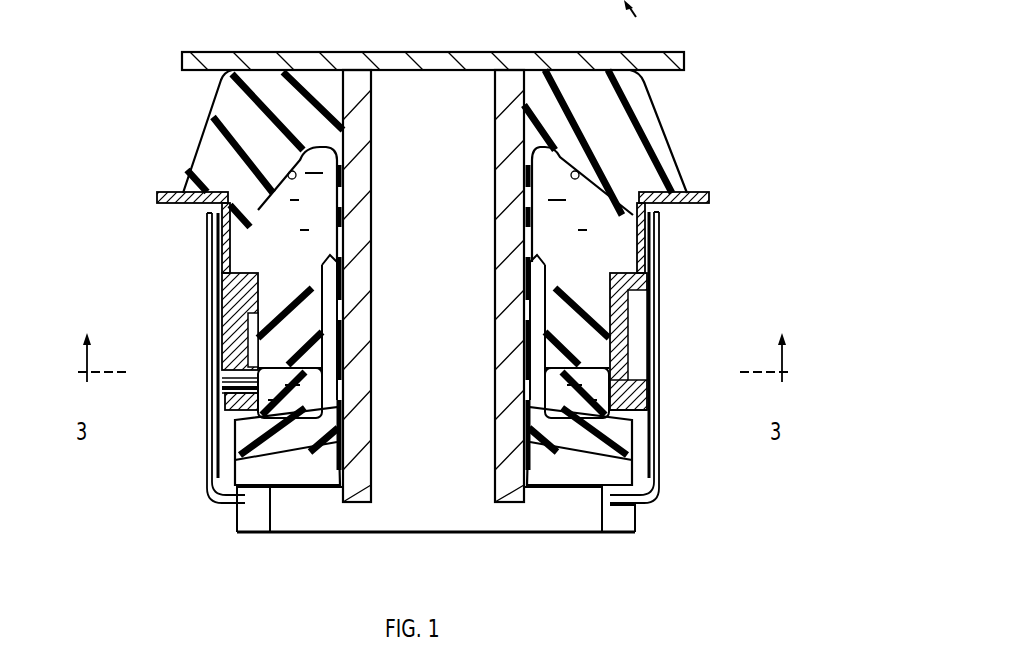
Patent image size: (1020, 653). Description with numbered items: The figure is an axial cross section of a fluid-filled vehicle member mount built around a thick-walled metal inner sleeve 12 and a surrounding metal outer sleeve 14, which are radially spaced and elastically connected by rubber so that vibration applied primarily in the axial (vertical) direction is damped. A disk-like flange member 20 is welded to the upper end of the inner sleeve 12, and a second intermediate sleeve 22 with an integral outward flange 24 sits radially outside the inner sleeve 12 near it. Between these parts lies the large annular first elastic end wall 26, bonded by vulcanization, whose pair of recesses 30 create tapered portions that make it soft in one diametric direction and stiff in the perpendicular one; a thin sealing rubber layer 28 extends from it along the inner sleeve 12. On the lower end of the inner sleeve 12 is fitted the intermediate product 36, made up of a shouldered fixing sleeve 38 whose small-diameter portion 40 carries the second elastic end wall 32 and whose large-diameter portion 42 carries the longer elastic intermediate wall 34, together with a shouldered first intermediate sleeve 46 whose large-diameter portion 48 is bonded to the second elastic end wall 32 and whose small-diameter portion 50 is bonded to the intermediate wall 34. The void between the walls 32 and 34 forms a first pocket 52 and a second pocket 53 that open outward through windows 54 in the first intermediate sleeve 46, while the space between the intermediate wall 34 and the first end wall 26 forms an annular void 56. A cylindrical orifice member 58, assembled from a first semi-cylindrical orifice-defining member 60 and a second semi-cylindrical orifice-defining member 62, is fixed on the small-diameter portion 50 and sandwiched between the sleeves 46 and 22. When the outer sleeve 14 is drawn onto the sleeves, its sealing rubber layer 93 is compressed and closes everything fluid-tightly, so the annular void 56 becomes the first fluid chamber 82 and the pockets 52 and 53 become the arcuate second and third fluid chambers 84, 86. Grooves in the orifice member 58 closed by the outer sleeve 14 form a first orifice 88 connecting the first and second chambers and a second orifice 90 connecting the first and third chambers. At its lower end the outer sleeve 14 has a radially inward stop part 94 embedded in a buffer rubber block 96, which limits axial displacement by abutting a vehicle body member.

The inner sleeve 12 is at (358, 495).
The outer sleeve 14 is at (652, 425).
The flange member 20 is at (262, 62).
The second intermediate sleeve 22 is at (208, 225).
The outward flange 24 is at (687, 200).
The first elastic end wall 26 is at (637, 128).
The sealing rubber layer 28 is at (520, 222).
The recesses 30 is at (293, 170).
The second elastic end wall 32 is at (293, 422).
The elastic intermediate wall 34 is at (563, 297).
The intermediate product 36 is at (573, 465).
The fixing sleeve 38 is at (303, 323).
The small-diameter portion 40 is at (343, 470).
The large-diameter portion 42 is at (540, 323).
The first intermediate sleeve 46 is at (662, 470).
The large-diameter portion 48 is at (215, 478).
The small-diameter portion 50 is at (657, 338).
The first pocket 52 is at (552, 455).
The second pocket 53 is at (277, 420).
The windows 54 is at (258, 383).
The annular void 56 is at (307, 282).
The orifice member 58 is at (198, 354).
The first semi-cylindrical orifice-defining member 60 is at (638, 281).
The second semi-cylindrical orifice-defining member 62 is at (228, 308).
The first fluid chamber 82 is at (263, 203).
The second fluid chamber 84 is at (590, 505).
The third fluid chamber 86 is at (308, 435).
The first orifice 88 is at (642, 312).
The second orifice 90 is at (232, 392).
The sealing rubber layer 93 is at (232, 412).
The stop part 94 is at (240, 505).
The buffer rubber block 96 is at (630, 517).